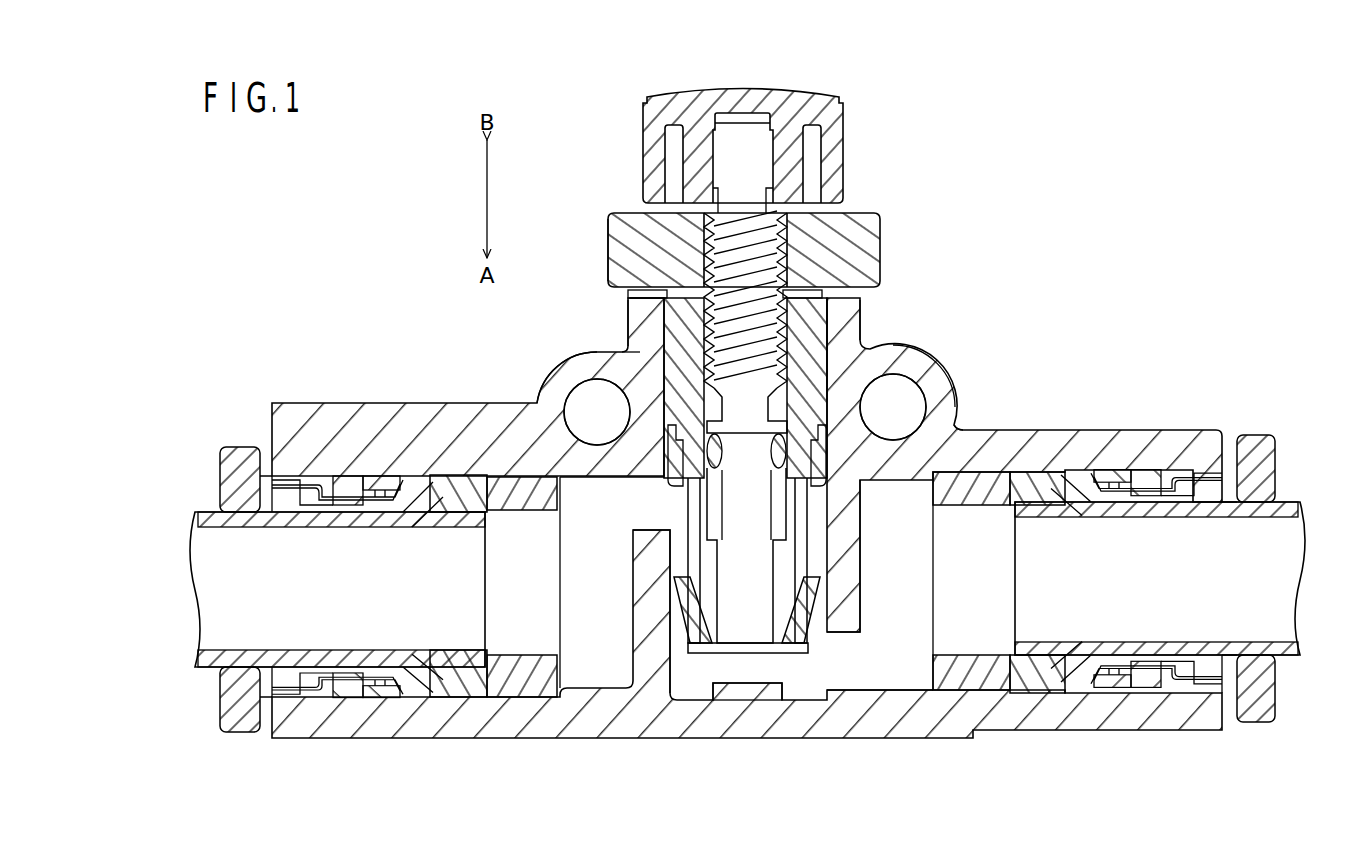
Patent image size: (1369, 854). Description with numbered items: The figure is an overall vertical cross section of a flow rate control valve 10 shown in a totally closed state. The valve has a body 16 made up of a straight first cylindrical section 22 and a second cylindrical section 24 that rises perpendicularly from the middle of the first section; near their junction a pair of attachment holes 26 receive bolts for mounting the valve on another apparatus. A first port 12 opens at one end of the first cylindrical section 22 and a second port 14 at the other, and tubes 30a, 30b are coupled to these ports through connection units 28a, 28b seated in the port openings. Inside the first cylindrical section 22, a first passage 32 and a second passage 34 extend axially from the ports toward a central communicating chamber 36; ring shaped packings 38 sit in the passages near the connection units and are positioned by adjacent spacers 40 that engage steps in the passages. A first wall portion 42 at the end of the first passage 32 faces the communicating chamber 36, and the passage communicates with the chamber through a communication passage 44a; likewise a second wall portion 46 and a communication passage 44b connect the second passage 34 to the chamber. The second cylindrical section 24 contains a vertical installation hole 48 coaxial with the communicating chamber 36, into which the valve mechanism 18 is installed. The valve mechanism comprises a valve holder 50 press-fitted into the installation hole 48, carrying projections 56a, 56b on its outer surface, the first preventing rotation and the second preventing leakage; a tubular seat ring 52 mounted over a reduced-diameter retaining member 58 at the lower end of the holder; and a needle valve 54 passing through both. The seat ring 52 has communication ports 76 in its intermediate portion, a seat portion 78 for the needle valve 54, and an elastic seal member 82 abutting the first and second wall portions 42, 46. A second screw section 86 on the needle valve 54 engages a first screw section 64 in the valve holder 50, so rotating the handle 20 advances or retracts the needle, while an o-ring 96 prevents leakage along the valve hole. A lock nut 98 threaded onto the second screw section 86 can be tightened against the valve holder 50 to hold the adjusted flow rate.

The flow rate control valve 10 is at (1080, 116).
The first port 12 is at (330, 628).
The second port 14 is at (1153, 620).
The body 16 is at (1060, 426).
The valve mechanism 18 is at (853, 353).
The handle 20 is at (735, 100).
The first cylindrical section 22 is at (390, 412).
The second cylindrical section 24 is at (645, 340).
The attachment holes 26 is at (600, 390).
The connection unit 28a is at (212, 478).
The connection unit 28b is at (1276, 462).
The tube 30a is at (220, 517).
The tube 30b is at (1285, 510).
The first passage 32 is at (580, 668).
The second passage 34 is at (890, 685).
The communicating chamber 36 is at (748, 665).
The packings 38 is at (463, 673).
The spacers 40 is at (533, 680).
The first wall portion 42 is at (640, 595).
The communication passage 44a is at (648, 513).
The communication passage 44b is at (847, 665).
The second wall portion 46 is at (848, 568).
The installation hole 48 is at (917, 350).
The valve holder 50 is at (828, 343).
The seat ring 52 is at (812, 540).
The needle valve 54 is at (732, 658).
The first projection 56a is at (645, 295).
The projection 56b is at (610, 392).
The retaining member 58 is at (947, 420).
The first screw section 64 is at (622, 218).
The communication ports 76 is at (693, 507).
The seat portion 78 is at (773, 548).
The seal member 82 is at (807, 632).
The second screw section 86 is at (762, 252).
The o-ring 96 is at (562, 392).
The lock nut 98 is at (860, 213).